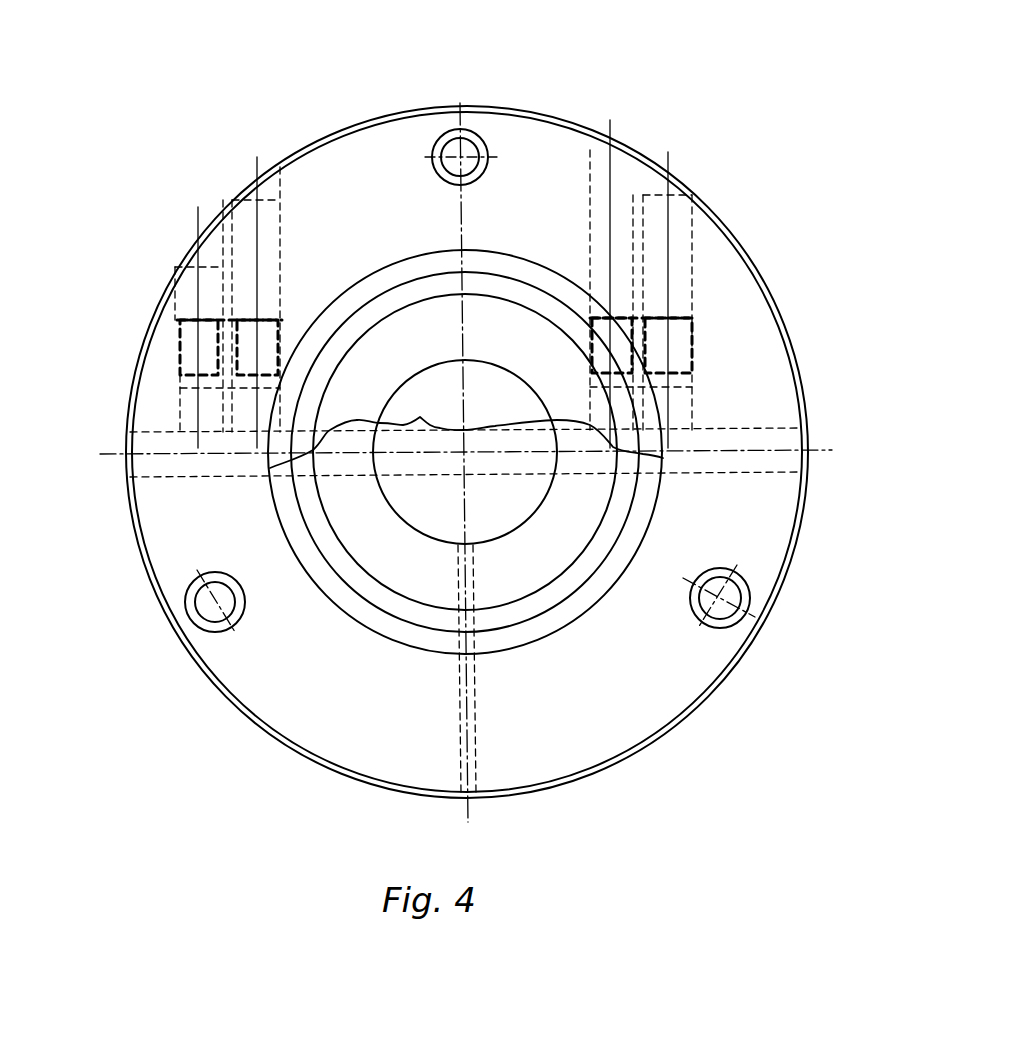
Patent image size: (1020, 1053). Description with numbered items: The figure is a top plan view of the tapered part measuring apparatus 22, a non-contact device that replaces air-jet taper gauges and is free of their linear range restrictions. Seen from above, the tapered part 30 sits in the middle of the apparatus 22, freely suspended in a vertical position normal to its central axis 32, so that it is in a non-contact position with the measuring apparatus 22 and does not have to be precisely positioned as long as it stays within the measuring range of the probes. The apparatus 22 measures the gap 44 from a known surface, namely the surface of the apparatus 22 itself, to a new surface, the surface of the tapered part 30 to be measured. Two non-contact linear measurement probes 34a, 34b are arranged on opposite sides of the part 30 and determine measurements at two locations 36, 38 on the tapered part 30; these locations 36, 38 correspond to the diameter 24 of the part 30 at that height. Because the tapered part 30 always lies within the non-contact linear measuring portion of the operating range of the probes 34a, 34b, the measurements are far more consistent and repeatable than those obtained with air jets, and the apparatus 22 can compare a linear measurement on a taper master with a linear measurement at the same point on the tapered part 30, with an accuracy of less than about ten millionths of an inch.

The tapered part measuring apparatus 22 is at (786, 152).
The diameter 24 is at (420, 417).
The tapered part 30 is at (522, 333).
The central axis 32 is at (462, 454).
The probe 34a is at (678, 393).
The probe 34b is at (190, 405).
The location 36 is at (617, 450).
The location 38 is at (320, 452).
The gap 44 is at (560, 584).